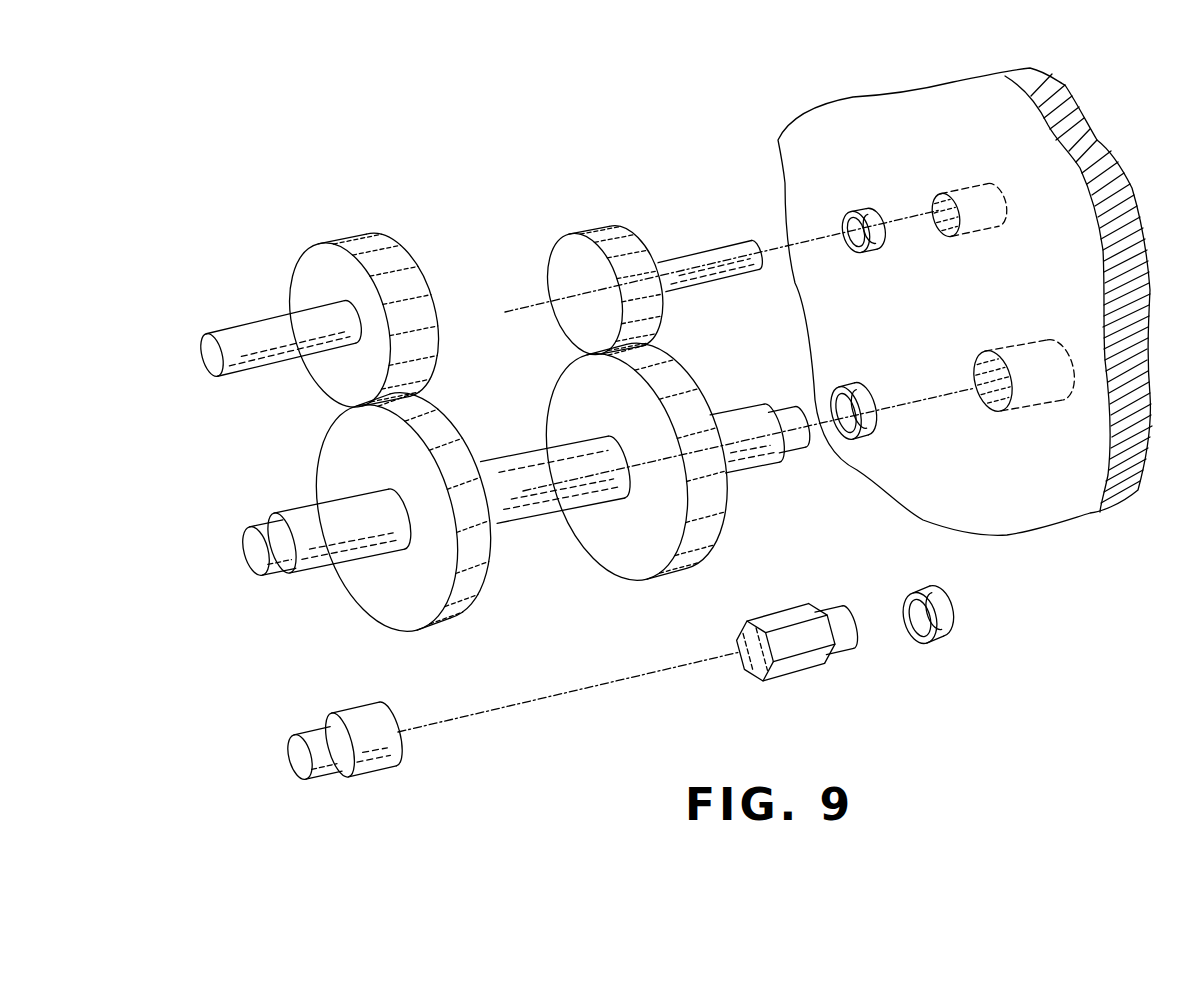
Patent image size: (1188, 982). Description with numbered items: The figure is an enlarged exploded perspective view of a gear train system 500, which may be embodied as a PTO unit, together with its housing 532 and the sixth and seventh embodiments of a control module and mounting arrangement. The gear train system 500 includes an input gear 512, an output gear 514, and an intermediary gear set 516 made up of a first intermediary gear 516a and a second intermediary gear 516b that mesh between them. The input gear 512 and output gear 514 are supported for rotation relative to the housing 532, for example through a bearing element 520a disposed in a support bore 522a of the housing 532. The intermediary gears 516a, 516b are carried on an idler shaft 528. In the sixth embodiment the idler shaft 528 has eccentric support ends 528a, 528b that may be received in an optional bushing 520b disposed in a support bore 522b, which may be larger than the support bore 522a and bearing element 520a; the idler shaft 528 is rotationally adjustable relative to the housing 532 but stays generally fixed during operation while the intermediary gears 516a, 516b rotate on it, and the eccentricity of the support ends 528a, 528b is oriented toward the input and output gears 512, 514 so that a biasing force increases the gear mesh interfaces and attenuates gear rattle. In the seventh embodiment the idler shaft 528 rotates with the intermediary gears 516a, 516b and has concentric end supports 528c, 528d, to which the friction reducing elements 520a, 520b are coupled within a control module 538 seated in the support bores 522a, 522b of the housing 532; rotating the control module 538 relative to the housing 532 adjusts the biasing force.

The gear train system 500 is at (546, 162).
The input gear 512 is at (308, 265).
The output gear 514 is at (568, 270).
The intermediary gear set 516 is at (522, 400).
The first intermediary gear 516a is at (338, 452).
The second intermediary gear 516b is at (625, 557).
The bearing element 520a is at (840, 228).
The bushing 520b is at (870, 425).
The support bore 522a is at (978, 183).
The support bore 522b is at (1023, 343).
The idler shaft 528 is at (530, 508).
The eccentric support end 528a is at (287, 565).
The eccentric support end 528b is at (797, 462).
The end support 528c is at (295, 753).
The end support 528d is at (840, 655).
The housing 532 is at (818, 133).
The control module 538 is at (962, 628).